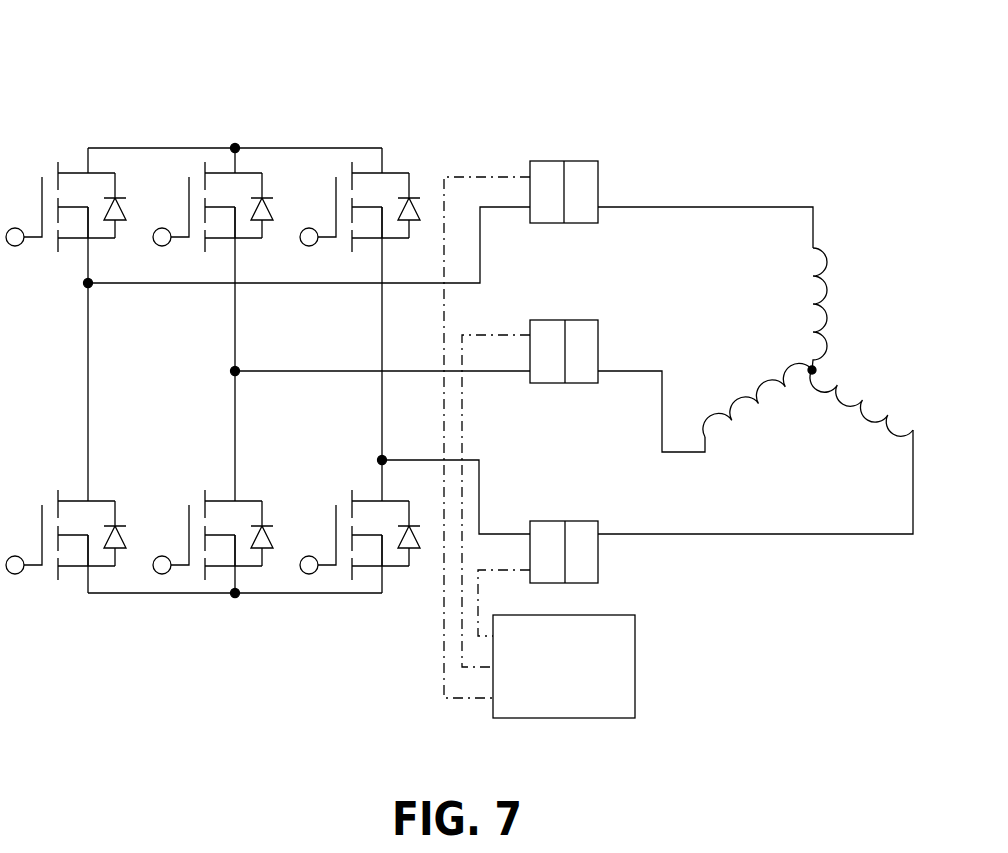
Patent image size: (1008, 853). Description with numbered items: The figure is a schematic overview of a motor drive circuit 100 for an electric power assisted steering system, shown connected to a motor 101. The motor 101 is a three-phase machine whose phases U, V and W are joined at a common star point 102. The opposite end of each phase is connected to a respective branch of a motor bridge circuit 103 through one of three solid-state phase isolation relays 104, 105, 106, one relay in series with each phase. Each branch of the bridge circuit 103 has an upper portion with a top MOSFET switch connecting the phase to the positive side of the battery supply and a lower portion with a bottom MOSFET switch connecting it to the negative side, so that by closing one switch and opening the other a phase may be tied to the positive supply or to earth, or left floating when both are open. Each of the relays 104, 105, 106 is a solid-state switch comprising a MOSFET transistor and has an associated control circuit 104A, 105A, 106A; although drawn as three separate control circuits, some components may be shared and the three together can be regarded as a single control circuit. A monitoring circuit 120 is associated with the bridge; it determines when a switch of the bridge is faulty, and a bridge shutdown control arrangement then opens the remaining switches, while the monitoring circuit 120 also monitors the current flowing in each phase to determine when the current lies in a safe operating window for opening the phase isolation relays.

The motor drive circuit 100 is at (103, 35).
The motor 101 is at (815, 550).
The star point 102 is at (815, 369).
The motor bridge circuit 103 is at (189, 606).
The solid-state phase isolation relay 104 is at (547, 172).
The control circuit 104A is at (585, 185).
The solid-state phase isolation relay 105 is at (547, 331).
The control circuit 105A is at (585, 344).
The solid-state phase isolation relay 106 is at (547, 532).
The control circuit 106A is at (586, 550).
The monitoring circuit 120 is at (636, 678).